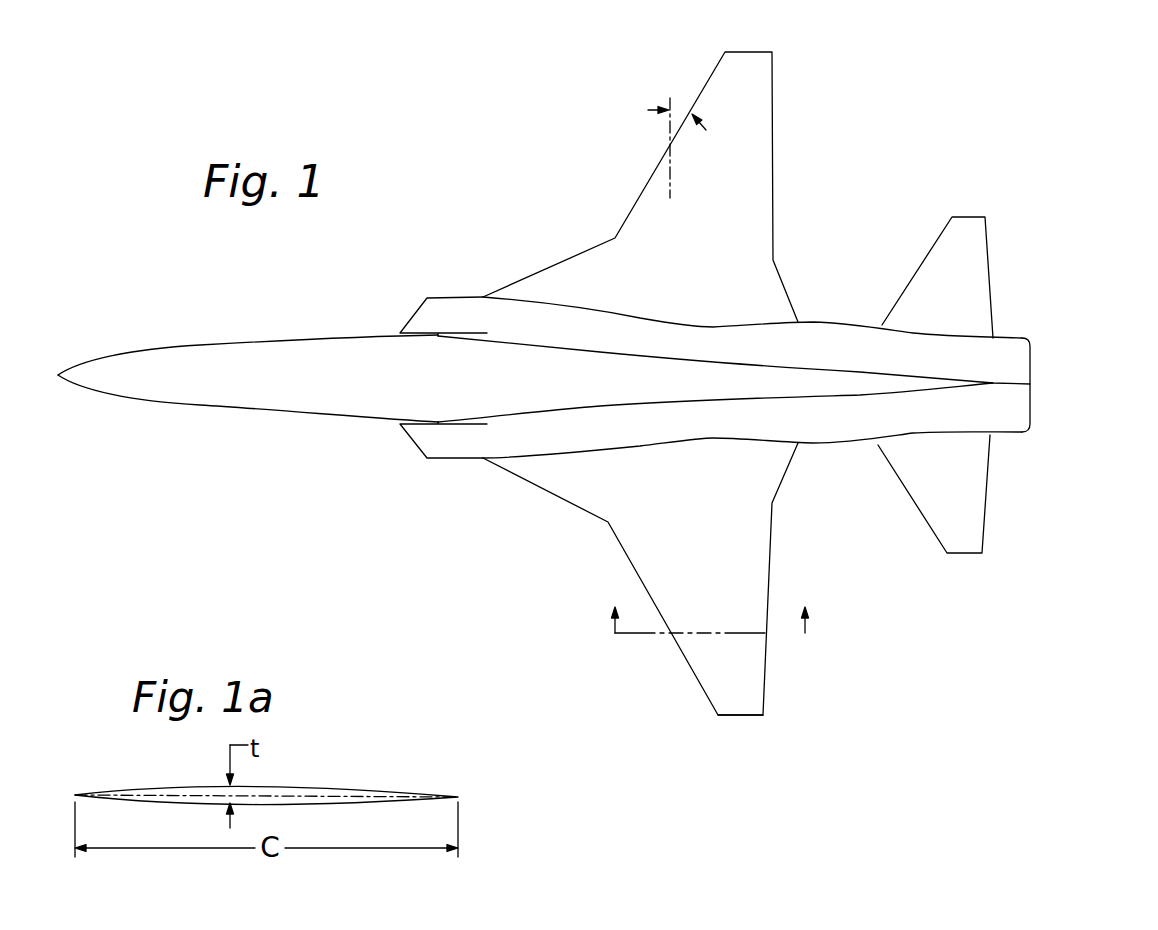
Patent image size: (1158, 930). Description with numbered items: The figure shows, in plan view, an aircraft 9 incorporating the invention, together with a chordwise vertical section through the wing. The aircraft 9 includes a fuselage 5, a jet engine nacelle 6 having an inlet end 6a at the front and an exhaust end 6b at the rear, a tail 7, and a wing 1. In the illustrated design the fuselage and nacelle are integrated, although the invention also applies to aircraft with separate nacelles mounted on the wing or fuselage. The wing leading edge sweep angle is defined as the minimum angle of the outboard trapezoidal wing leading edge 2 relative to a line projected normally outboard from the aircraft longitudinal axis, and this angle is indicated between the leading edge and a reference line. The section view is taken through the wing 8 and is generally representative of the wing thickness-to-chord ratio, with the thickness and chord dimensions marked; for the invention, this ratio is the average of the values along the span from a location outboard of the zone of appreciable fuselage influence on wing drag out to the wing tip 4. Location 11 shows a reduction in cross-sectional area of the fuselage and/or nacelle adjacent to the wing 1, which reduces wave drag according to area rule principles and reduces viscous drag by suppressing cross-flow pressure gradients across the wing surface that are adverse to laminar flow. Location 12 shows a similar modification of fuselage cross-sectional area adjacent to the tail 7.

In FIG. 1, the wing 1 is at (682, 677).
In FIG. 1, the outboard trapezoidal wing leading edge 2 is at (648, 158).
In FIG. 1, the wing tip 4 is at (748, 726).
In FIG. 1, the fuselage 5 is at (150, 406).
In FIG. 1, the jet engine nacelle 6 is at (444, 468).
In FIG. 1, the inlet end 6a is at (397, 447).
In FIG. 1, the exhaust end 6b is at (1042, 414).
In FIG. 1, the tail 7 is at (998, 500).
In FIG. 1A, the wing 8 is at (314, 773).
In FIG. 1, the aircraft 9 is at (188, 336).
In FIG. 1, the location of reduced fuselage/nacelle cross-sectional area 11 is at (732, 315).
In FIG. 1, the location of modified fuselage cross-sectional area 12 is at (959, 325).